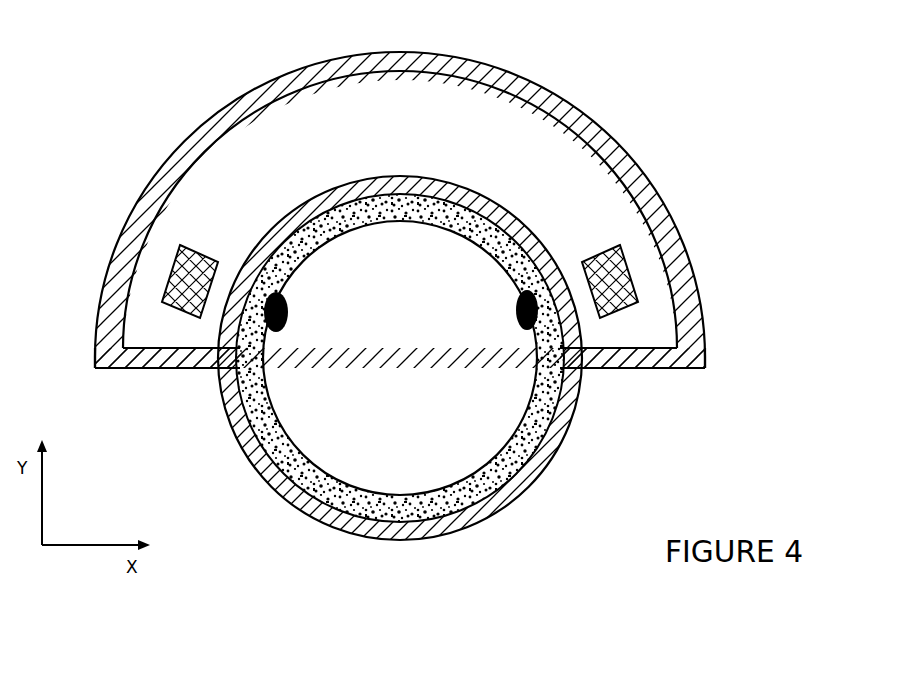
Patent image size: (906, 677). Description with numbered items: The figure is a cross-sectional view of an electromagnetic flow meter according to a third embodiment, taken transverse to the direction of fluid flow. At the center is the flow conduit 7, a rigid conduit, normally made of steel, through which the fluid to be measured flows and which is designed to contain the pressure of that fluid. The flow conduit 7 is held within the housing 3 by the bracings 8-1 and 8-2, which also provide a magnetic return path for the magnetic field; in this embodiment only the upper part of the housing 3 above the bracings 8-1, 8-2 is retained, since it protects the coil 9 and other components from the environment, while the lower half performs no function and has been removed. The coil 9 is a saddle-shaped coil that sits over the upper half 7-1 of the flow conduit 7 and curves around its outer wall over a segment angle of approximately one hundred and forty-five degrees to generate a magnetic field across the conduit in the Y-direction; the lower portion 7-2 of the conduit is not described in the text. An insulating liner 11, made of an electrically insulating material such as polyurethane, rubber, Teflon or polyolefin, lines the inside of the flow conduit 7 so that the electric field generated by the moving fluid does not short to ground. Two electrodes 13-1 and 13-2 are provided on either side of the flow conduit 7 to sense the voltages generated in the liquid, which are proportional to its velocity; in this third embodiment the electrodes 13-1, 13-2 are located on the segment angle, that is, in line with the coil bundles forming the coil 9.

The housing 3 is at (547, 90).
The flow conduit 7 is at (550, 460).
The upper half of the flow conduit 7-1 is at (470, 205).
The inner layer of tubular body 7-2 is at (512, 502).
The bracing 8-1 is at (154, 370).
The bracing 8-2 is at (630, 370).
The coil 9 is at (200, 244).
The insulating liner 11 is at (334, 479).
The electrode 13-1 is at (288, 328).
The electrode 13-2 is at (516, 318).